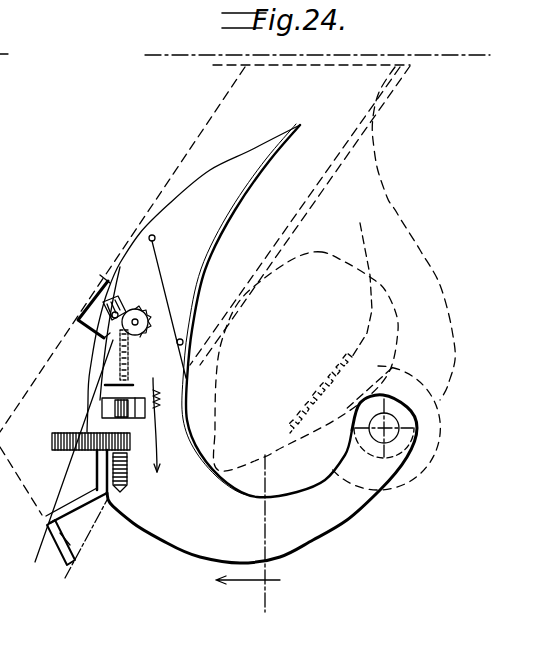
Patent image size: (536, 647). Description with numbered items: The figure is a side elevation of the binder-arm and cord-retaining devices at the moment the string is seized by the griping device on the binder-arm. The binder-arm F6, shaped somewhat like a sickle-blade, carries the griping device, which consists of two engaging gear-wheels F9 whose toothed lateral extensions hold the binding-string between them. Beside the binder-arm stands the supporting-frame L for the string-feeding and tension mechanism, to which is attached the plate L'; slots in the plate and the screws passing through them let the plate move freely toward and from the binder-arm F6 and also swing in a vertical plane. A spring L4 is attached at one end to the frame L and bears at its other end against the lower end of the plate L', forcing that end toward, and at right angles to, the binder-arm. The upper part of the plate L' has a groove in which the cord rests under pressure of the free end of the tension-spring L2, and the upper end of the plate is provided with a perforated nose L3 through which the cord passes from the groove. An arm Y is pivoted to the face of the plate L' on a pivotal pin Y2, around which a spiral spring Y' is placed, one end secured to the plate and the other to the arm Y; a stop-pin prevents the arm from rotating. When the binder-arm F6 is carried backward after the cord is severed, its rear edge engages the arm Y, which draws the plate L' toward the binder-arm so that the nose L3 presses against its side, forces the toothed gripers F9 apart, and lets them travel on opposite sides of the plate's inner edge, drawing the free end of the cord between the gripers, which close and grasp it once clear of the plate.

The binder-arm F6 is at (252, 343).
The griping gear-wheels F9 is at (122, 300).
The supporting-frame L is at (91, 333).
The plate L' is at (56, 459).
The tension-spring L2 is at (128, 352).
The perforated nose L3 is at (137, 311).
The spring L4 is at (91, 432).
The arm Y is at (129, 434).
The spiral spring Y' is at (140, 420).
The pivotal pin Y2 is at (155, 422).